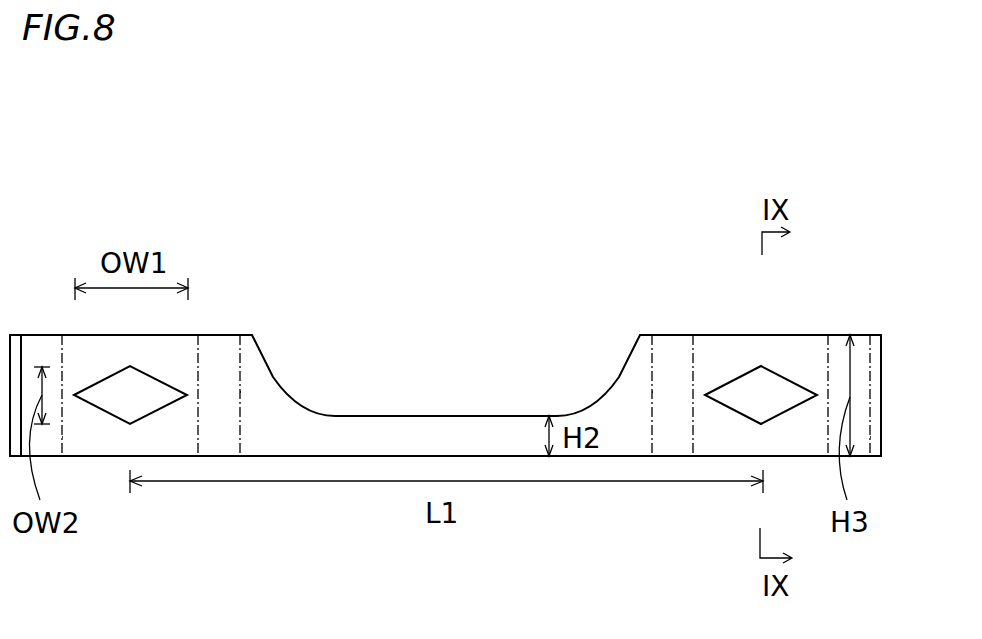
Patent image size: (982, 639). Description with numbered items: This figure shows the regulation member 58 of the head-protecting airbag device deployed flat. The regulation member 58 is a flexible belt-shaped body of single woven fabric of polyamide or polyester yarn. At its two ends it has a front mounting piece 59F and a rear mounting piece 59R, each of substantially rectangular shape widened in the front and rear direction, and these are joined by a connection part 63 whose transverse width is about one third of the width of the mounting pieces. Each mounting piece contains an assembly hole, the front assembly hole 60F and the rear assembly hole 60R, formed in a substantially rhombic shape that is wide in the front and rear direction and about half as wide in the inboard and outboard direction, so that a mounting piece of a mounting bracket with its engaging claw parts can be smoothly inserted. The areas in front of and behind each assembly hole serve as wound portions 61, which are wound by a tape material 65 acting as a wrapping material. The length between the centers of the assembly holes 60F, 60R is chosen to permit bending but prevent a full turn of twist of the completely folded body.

The regulation member 58 is at (620, 200).
The front mounting piece 59F is at (220, 352).
The rear mounting piece 59R is at (673, 352).
The front assembly hole 60F is at (165, 382).
The rear assembly hole 60R is at (733, 378).
The wound portion 61 is at (42, 348).
The connection part 63 is at (445, 428).
The tape material 65 is at (241, 392).